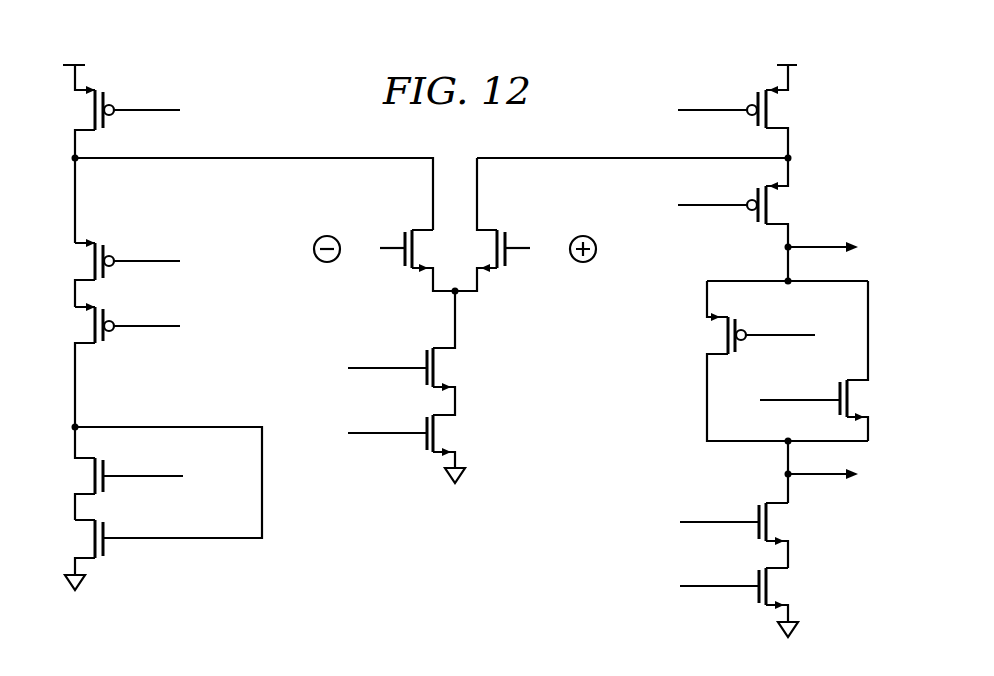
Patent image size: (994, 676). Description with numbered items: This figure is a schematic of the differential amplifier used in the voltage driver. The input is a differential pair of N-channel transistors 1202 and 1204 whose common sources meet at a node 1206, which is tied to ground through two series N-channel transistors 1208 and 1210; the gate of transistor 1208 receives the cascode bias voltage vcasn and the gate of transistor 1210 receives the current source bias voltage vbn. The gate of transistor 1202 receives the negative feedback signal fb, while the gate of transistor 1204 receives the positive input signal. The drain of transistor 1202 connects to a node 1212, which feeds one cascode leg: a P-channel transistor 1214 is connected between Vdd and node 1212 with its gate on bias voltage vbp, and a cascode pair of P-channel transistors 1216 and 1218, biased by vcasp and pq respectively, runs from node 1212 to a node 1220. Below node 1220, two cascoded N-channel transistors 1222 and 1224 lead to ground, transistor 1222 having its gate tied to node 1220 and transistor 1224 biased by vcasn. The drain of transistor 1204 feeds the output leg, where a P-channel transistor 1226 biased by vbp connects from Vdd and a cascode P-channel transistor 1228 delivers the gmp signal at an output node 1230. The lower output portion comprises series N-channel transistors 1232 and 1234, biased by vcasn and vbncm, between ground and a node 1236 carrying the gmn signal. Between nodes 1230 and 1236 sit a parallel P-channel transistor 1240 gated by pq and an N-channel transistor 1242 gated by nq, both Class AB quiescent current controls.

The differential input transistor 1202 is at (420, 228).
The differential input transistor 1204 is at (488, 228).
The node 1206 is at (460, 295).
The N-channel transistor 1208 is at (425, 352).
The N-channel transistor 1210 is at (425, 450).
The node 1212 is at (80, 165).
The P-channel transistor 1214 is at (103, 93).
The cascode P-channel transistor 1216 is at (104, 247).
The cascode P-channel transistor 1218 is at (104, 312).
The node 1220 is at (80, 424).
The N-channel transistor 1222 is at (105, 555).
The N-channel transistor 1224 is at (105, 463).
The P-channel transistor 1226 is at (756, 93).
The cascode P-channel transistor 1228 is at (756, 191).
The output node 1230 is at (795, 244).
The N-channel transistor 1232 is at (757, 510).
The N-channel transistor 1234 is at (757, 603).
The node 1236 is at (795, 480).
The P-channel transistor 1240 is at (738, 326).
The N-channel transistor 1242 is at (838, 386).